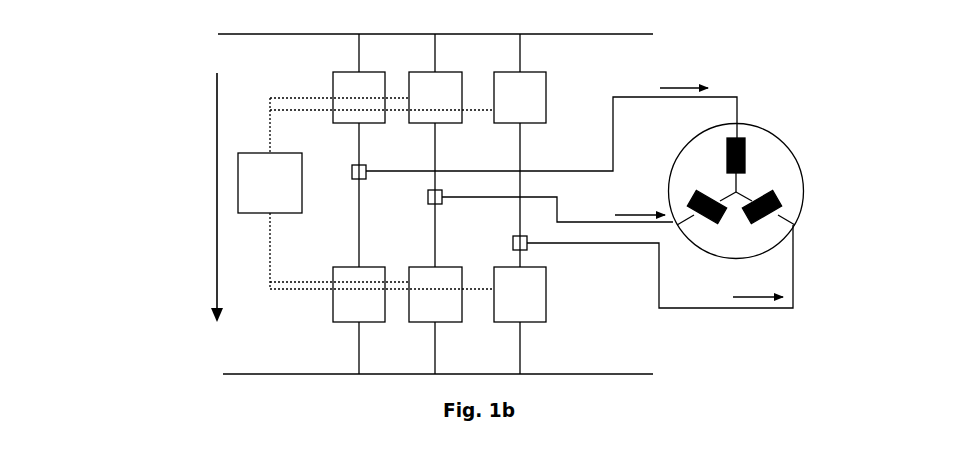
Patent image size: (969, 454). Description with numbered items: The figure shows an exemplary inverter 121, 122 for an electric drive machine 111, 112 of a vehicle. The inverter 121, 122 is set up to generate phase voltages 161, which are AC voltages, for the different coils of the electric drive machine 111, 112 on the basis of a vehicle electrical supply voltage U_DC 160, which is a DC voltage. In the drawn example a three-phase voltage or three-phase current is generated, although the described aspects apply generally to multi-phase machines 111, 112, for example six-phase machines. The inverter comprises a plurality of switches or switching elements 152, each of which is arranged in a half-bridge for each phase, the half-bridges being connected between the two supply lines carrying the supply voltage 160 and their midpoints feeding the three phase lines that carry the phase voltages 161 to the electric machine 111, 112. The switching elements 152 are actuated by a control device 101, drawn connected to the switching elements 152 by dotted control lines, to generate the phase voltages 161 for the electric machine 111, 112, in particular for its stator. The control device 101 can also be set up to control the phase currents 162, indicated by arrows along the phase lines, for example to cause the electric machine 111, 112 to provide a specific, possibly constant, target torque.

The control device 101 is at (302, 208).
The electric drive machine 111 is at (765, 180).
The electric drive machine 112 is at (815, 123).
The inverter 121 is at (370, 200).
The inverter 122 is at (213, 44).
The switching elements 152 is at (333, 82).
The vehicle electrical supply voltage 160 is at (217, 107).
The phase voltages 161 is at (572, 170).
The phase currents 162 is at (681, 85).